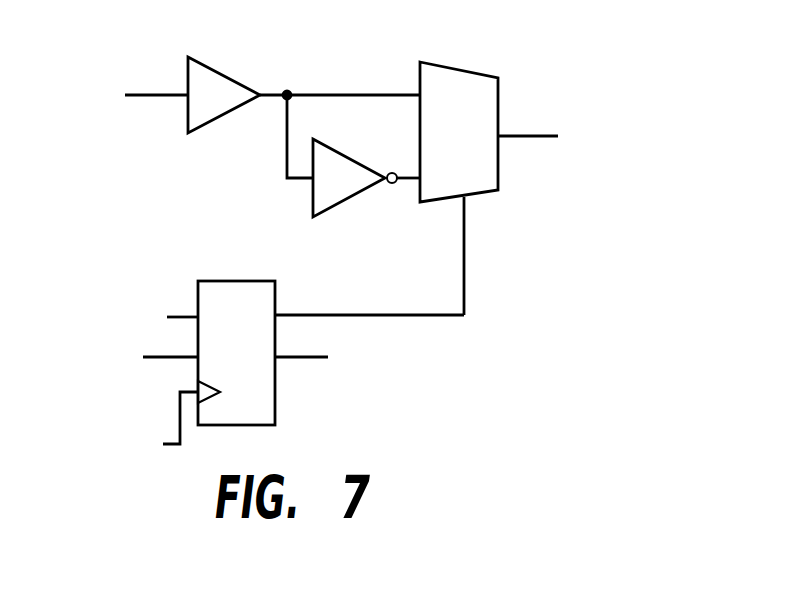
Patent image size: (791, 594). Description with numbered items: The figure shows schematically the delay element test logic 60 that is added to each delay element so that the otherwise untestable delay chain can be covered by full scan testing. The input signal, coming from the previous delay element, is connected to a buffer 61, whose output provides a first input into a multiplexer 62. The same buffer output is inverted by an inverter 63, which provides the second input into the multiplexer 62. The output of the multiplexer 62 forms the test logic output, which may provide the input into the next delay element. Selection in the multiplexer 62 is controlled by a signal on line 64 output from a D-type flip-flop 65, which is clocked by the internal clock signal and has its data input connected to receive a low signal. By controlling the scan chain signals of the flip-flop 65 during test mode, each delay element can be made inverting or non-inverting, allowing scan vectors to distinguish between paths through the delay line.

The delay element test logic 60 is at (364, 38).
The buffer 61 is at (222, 72).
The multiplexer 62 is at (468, 69).
The inverter 63 is at (340, 205).
The line 64 is at (500, 263).
The D-type flip-flop 65 is at (248, 281).